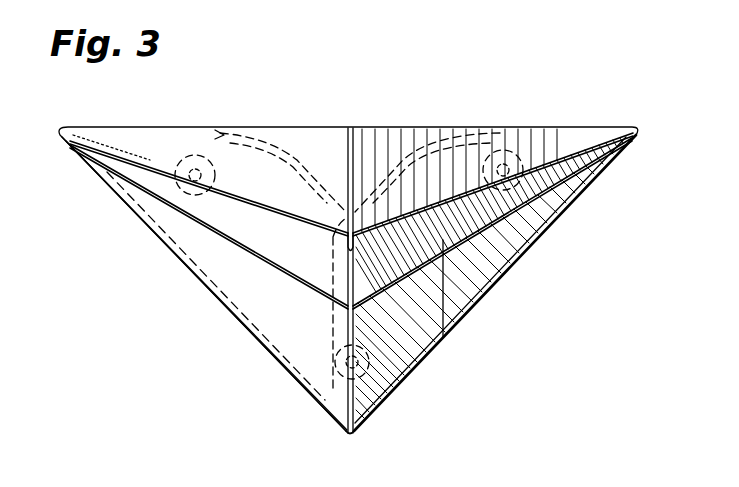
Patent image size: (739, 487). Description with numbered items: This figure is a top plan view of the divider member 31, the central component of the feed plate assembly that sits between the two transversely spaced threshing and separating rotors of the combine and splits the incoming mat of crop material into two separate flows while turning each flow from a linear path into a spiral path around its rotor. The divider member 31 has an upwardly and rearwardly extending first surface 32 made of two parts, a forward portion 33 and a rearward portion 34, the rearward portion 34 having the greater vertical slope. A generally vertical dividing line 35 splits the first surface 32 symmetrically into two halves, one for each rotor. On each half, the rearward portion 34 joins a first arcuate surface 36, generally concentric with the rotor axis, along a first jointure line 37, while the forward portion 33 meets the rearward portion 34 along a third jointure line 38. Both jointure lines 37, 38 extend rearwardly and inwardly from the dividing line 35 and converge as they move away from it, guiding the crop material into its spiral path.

The divider member 31 is at (131, 311).
The first surface 32 is at (265, 353).
The forward portion 33 is at (307, 355).
The rearward portion 34 is at (243, 223).
The dividing line 35 is at (350, 397).
The first arcuate surface 36 is at (174, 143).
The first jointure line 37 is at (152, 168).
The third jointure line 38 is at (150, 192).